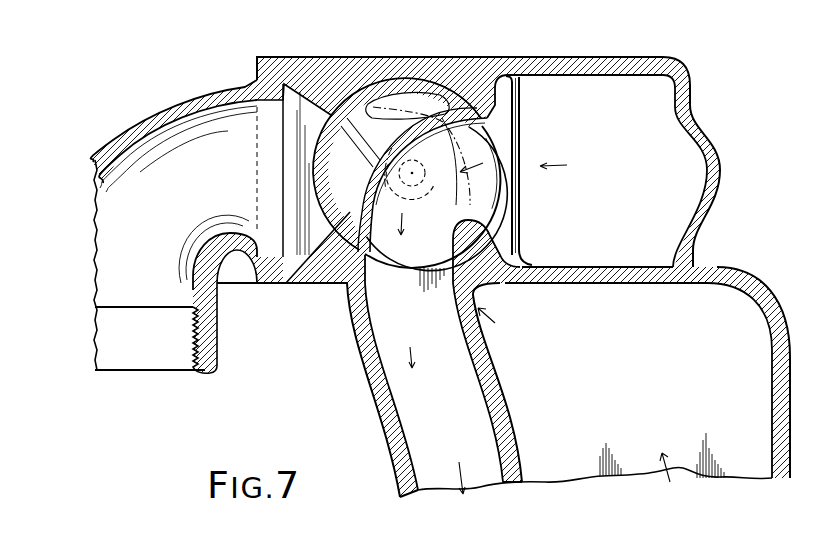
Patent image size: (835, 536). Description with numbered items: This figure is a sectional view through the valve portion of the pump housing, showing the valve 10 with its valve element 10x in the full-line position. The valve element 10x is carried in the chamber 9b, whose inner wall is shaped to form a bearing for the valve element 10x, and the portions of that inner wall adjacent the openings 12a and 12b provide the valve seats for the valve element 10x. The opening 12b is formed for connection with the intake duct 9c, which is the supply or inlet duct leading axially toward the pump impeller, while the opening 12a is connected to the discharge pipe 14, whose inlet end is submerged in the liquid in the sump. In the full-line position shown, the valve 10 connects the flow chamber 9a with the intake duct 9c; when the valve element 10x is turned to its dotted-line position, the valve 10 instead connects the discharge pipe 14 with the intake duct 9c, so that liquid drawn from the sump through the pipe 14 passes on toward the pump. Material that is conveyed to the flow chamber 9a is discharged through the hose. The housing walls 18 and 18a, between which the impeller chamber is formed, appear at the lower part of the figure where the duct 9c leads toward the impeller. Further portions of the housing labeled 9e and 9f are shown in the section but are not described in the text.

The flow chamber 9a is at (693, 173).
The chamber 9b is at (460, 87).
The intake duct 9c is at (460, 386).
The inlet boss of housing 9e is at (297, 67).
The partition wall of housing 9f is at (557, 272).
The valve 10 is at (427, 266).
The valve element 10x is at (503, 127).
The opening 12a is at (283, 284).
The opening 12b is at (390, 267).
The discharge pipe 14 is at (213, 373).
The housing wall 18 is at (410, 499).
The housing wall 18a is at (516, 484).